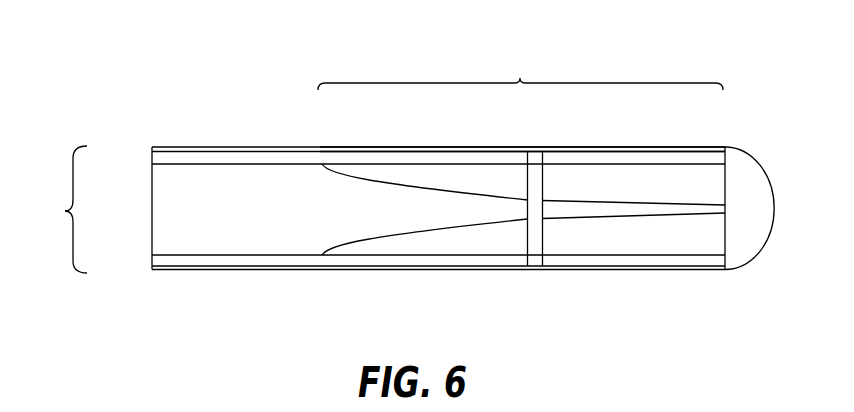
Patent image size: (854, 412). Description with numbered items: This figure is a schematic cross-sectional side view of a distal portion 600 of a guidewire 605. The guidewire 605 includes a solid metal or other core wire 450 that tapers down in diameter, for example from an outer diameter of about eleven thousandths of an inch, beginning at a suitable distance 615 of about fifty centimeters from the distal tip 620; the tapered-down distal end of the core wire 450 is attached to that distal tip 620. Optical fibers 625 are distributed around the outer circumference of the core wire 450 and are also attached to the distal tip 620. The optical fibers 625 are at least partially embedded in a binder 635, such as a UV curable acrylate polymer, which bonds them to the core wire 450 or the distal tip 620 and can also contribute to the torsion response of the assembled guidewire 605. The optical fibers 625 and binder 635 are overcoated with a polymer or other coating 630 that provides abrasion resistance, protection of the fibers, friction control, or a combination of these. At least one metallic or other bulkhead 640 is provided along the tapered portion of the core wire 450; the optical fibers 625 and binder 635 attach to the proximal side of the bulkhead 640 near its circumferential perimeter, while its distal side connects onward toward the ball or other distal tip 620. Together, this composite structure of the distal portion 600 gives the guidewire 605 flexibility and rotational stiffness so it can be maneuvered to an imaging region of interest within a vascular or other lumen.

The distal portion 600 is at (400, 169).
The guidewire 605 is at (57, 209).
The distance 615 is at (520, 69).
The distal tip 620 is at (731, 271).
The optical fibers 625 is at (152, 154).
The core wire 450 is at (152, 207).
The coating 630 is at (368, 270).
The binder 635 is at (432, 147).
The bulkhead 640 is at (535, 270).